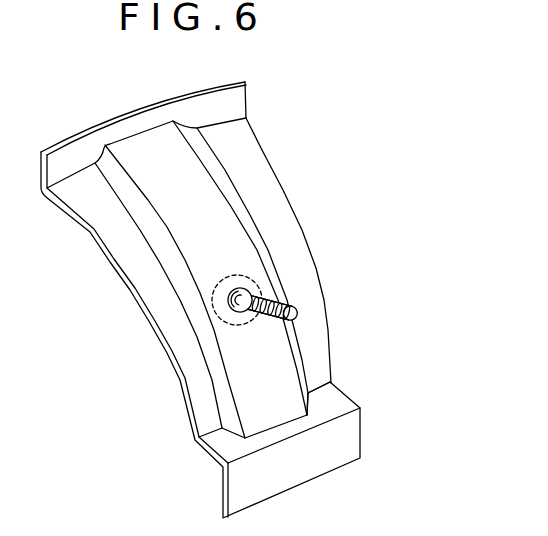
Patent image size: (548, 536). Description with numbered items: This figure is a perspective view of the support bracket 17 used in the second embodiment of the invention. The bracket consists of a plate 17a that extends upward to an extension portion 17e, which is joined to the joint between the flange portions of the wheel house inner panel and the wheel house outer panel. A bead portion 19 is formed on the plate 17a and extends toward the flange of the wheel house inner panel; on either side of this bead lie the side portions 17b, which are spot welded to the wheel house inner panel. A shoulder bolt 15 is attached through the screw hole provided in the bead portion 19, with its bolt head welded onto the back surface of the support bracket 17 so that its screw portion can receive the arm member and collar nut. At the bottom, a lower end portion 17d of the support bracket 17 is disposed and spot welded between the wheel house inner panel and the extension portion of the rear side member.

The support bracket 17 is at (332, 346).
The plate 17a is at (247, 148).
The side portions 17b is at (302, 267).
The lower end portion 17d is at (349, 443).
The extension portion 17e is at (238, 100).
The bead portion 19 is at (232, 252).
The shoulder bolt 15 is at (293, 301).